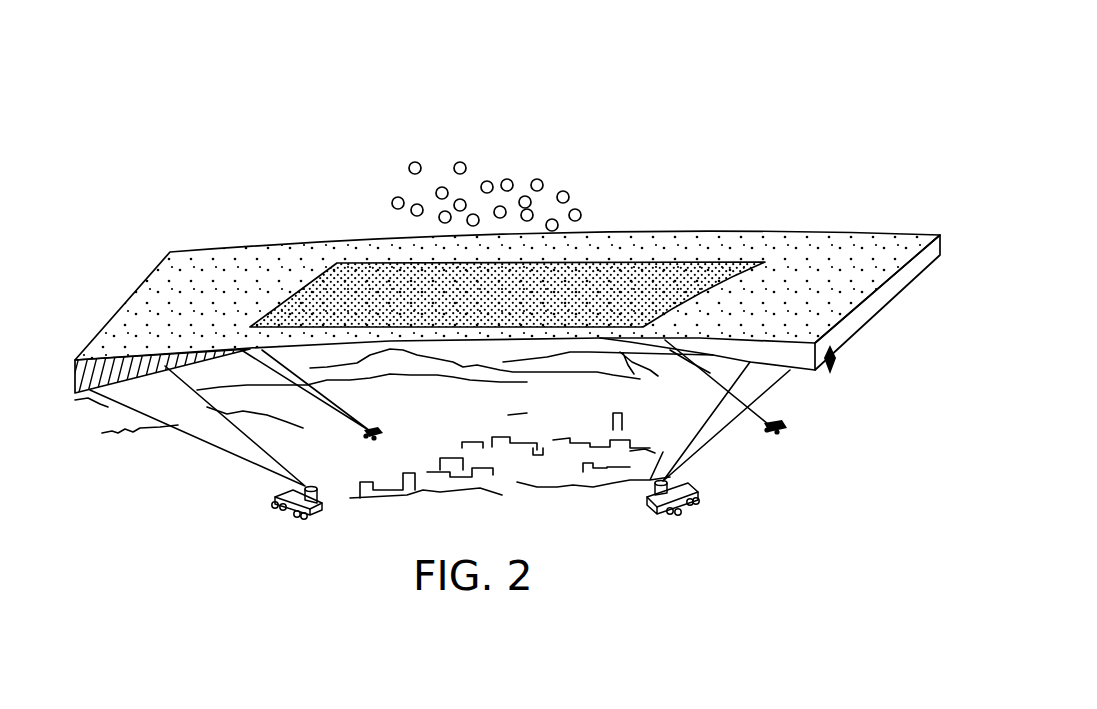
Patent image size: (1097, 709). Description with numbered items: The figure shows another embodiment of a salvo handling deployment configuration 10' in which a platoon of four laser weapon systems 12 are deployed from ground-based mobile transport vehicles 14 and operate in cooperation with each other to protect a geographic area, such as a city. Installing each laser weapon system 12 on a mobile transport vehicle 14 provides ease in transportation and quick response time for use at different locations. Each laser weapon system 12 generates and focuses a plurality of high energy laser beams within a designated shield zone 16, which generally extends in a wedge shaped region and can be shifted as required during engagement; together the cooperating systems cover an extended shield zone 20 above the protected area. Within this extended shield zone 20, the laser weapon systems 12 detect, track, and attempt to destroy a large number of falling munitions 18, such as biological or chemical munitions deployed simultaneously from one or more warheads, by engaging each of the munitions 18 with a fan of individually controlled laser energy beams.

The deployment configuration 10' is at (504, 309).
The laser weapon system 12 is at (321, 513).
The mobile transport vehicle 14 is at (383, 433).
The shield zone 16 is at (181, 426).
The falling munitions 18 is at (507, 179).
The extended shield zone 20 is at (707, 226).